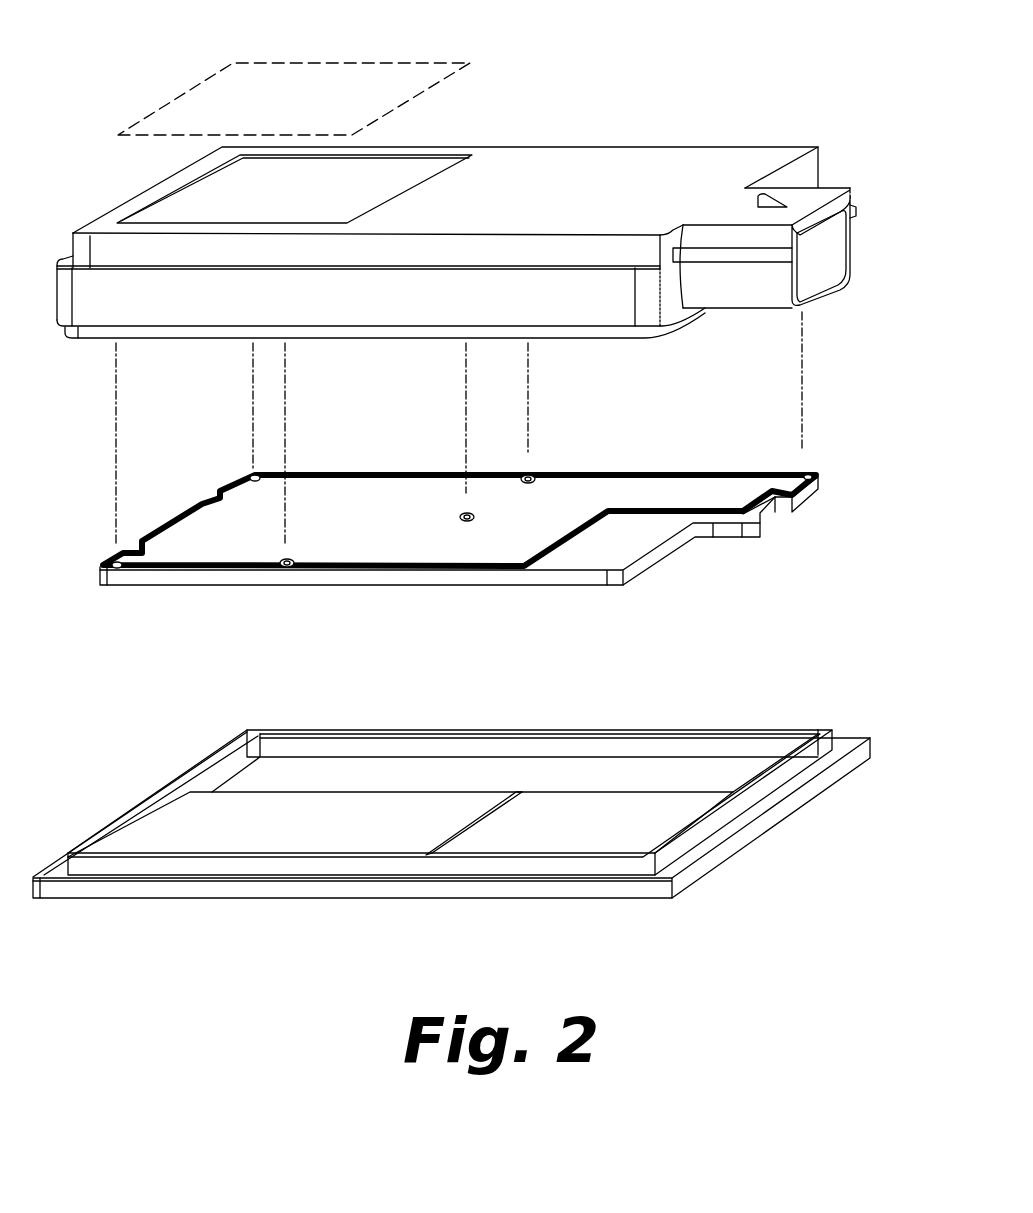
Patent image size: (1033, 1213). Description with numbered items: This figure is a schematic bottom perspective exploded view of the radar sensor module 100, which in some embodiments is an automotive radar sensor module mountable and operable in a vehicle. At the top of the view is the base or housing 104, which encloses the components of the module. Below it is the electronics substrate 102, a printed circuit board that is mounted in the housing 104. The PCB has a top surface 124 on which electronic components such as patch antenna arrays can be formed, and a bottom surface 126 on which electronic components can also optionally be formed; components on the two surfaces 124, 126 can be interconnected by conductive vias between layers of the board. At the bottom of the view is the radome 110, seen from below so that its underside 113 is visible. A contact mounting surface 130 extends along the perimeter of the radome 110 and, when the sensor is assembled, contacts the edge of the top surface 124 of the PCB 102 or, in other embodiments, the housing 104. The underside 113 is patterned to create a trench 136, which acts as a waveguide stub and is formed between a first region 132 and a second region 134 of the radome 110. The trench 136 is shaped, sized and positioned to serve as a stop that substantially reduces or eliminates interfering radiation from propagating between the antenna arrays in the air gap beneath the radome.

The radar sensor module 100 is at (553, 97).
The housing 104 is at (732, 146).
The electronics substrate 102 is at (500, 518).
The top surface 124 is at (336, 586).
The bottom surface 126 is at (308, 512).
The radome 110 is at (760, 838).
The contact mounting surface 130 is at (820, 728).
The region 132 is at (285, 815).
The region 134 is at (572, 822).
The trench 136 is at (493, 807).
The underside 113 is at (703, 772).